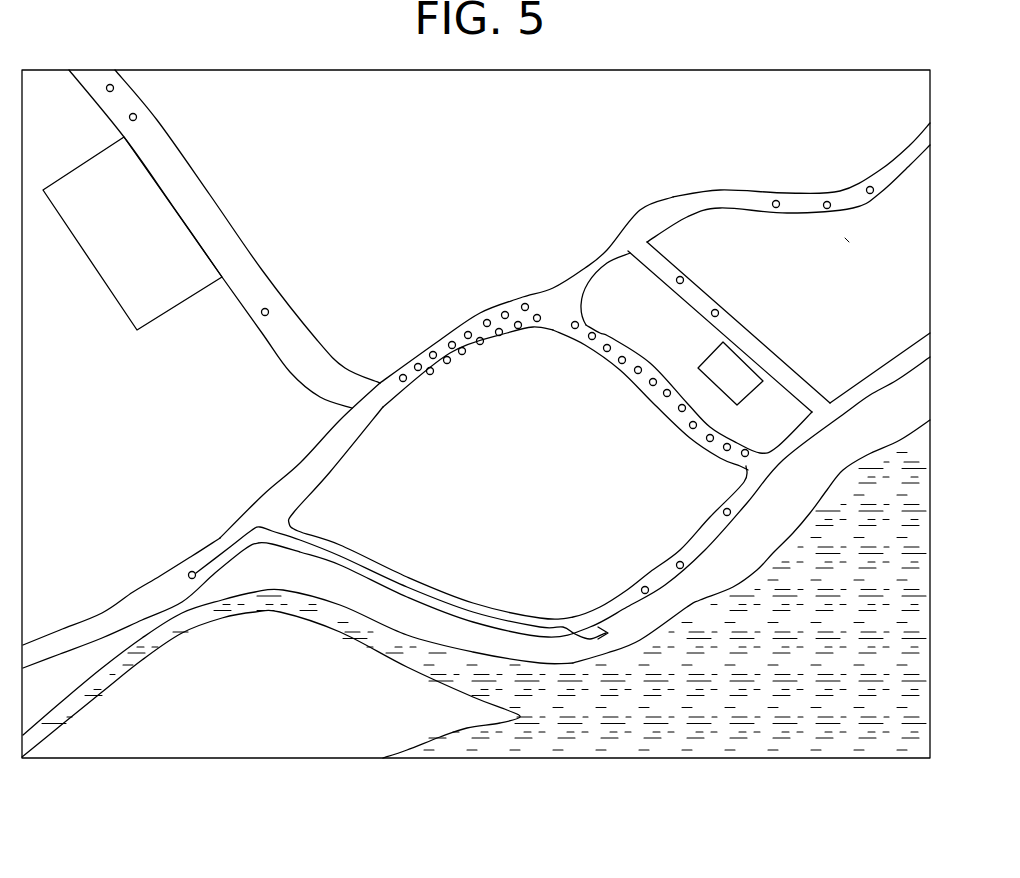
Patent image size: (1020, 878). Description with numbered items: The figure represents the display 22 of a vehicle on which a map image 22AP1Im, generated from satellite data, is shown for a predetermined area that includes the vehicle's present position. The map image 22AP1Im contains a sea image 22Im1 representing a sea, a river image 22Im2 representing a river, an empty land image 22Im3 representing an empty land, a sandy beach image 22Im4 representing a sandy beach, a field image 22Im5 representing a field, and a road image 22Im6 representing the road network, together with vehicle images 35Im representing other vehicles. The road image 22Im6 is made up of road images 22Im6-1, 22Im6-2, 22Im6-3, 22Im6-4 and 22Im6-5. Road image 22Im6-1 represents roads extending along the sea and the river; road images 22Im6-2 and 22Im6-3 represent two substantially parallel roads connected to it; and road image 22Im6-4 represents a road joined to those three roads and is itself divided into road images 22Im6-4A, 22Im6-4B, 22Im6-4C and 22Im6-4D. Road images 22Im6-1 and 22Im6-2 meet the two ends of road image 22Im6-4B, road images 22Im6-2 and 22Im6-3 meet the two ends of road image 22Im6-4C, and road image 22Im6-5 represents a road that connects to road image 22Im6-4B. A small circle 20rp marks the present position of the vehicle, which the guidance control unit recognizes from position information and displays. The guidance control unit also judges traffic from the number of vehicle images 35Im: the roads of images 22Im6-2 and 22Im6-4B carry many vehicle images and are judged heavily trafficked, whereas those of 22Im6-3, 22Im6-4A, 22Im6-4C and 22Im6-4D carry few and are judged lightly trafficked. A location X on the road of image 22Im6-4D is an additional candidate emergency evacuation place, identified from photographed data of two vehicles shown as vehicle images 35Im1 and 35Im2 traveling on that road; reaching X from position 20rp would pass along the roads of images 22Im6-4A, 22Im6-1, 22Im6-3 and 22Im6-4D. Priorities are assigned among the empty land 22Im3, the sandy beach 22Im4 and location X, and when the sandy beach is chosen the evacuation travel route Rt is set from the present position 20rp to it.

The display 22 is at (836, 69).
The road image 22Im6-5 is at (205, 212).
The field image 22Im5 is at (120, 297).
The road image 22Im6-4 is at (553, 290).
The road image 22Im6-4C is at (603, 258).
The road image 22Im6-4D is at (725, 197).
The road image 22Im6-3 is at (732, 321).
The road image 22Im6-2 is at (605, 355).
The road image 22Im6-1 is at (443, 596).
The road image 22Im6 is at (355, 440).
The road image 22Im6-4B is at (320, 458).
The road image 22Im6-4A is at (120, 604).
The river image 22Im2 is at (285, 604).
The sandy beach image 22Im4 is at (608, 592).
The sea image 22Im1 is at (808, 745).
The empty land image 22Im3 is at (720, 377).
The evacuation travel route Rt is at (543, 613).
The present position 20rp is at (194, 582).
The vehicle image 35Im is at (137, 116).
The vehicle image 35Im1 is at (776, 208).
The vehicle image 35Im2 is at (827, 209).
The location X is at (870, 186).
The map image 22AP1Im is at (847, 240).